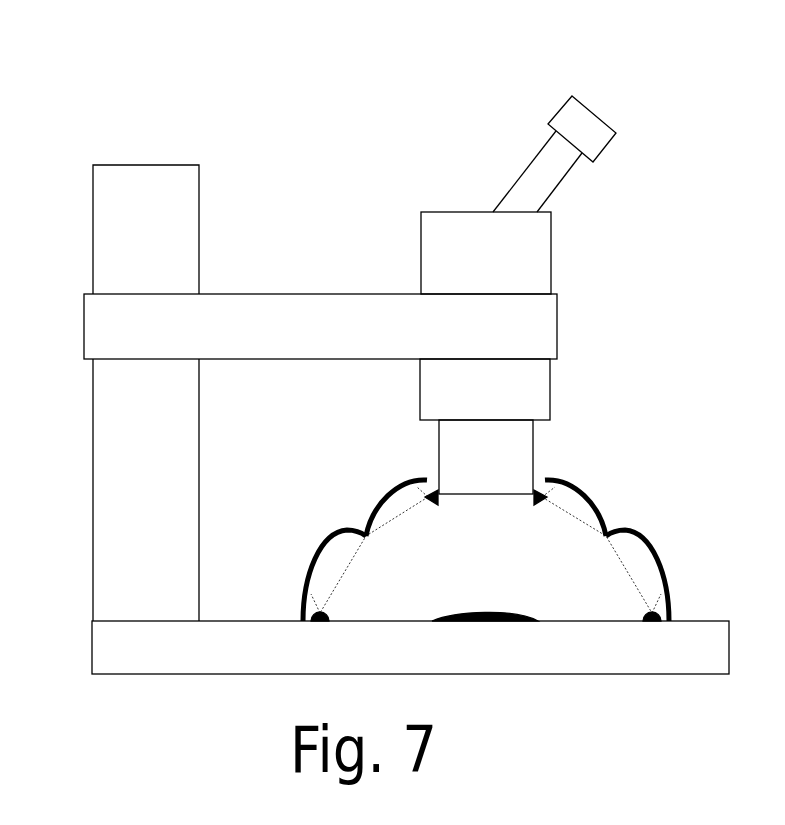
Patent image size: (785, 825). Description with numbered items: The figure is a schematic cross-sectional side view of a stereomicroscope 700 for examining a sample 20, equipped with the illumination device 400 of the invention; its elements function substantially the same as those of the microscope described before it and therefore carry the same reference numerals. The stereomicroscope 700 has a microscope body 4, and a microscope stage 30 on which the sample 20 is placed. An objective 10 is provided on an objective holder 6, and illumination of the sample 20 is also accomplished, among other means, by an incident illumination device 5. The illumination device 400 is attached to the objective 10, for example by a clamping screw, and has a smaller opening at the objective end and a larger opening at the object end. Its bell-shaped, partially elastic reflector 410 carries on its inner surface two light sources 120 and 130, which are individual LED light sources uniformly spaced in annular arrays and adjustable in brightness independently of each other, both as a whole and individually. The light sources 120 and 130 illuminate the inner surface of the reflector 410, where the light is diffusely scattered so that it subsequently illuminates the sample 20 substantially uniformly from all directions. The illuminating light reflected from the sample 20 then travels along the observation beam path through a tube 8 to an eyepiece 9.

The stereomicroscope 700 is at (160, 38).
The microscope body 4 is at (98, 486).
The incident illumination device 5 is at (238, 306).
The objective holder 6 is at (548, 385).
The tube 8 is at (548, 242).
The eyepiece 9 is at (566, 162).
The objective 10 is at (527, 443).
The sample 20 is at (488, 613).
The microscope stage 30 is at (566, 662).
The light source 120 is at (664, 611).
The light source 130 is at (544, 503).
The illumination device 400 is at (366, 497).
The reflector 410 is at (622, 531).